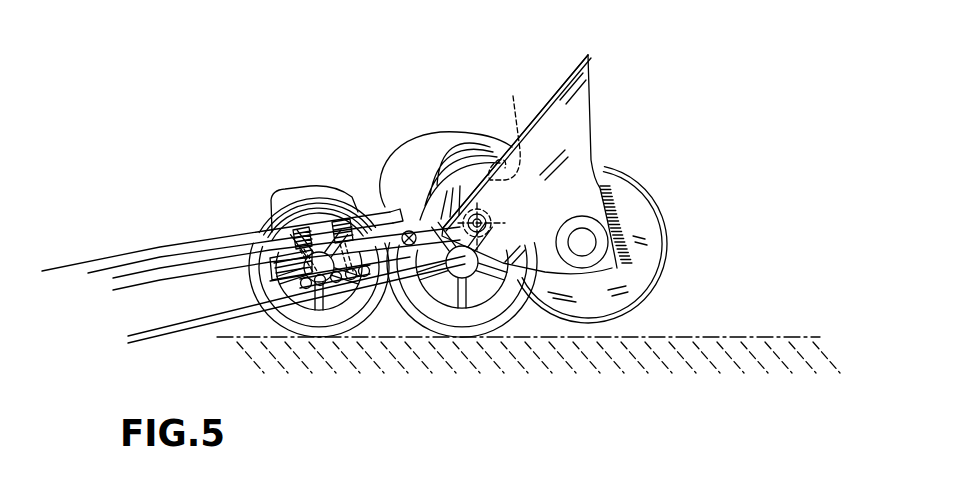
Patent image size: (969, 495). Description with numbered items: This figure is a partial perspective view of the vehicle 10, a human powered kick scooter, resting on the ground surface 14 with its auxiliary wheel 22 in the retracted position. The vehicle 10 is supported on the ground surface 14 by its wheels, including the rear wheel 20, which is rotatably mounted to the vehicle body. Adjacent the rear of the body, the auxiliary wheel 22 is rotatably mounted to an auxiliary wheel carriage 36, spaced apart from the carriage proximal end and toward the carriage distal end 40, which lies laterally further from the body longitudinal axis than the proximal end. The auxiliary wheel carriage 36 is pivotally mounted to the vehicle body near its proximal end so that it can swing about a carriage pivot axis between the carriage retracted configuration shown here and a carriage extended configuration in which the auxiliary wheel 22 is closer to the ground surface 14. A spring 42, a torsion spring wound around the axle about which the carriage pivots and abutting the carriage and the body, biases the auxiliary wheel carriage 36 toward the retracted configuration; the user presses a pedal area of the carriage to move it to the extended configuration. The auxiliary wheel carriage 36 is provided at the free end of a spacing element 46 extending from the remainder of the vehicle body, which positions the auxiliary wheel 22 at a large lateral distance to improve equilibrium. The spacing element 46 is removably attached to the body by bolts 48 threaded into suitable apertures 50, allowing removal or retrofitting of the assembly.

The vehicle 10 is at (180, 118).
The ground surface 14 is at (752, 337).
The rear wheel 20 is at (317, 334).
The auxiliary wheel 22 is at (662, 268).
The auxiliary wheel carriage 36 is at (612, 125).
The carriage distal end 40 is at (588, 55).
The spring 42 is at (413, 220).
The spacing element 46 is at (325, 262).
The bolts 48 is at (320, 288).
The apertures 50 is at (315, 196).